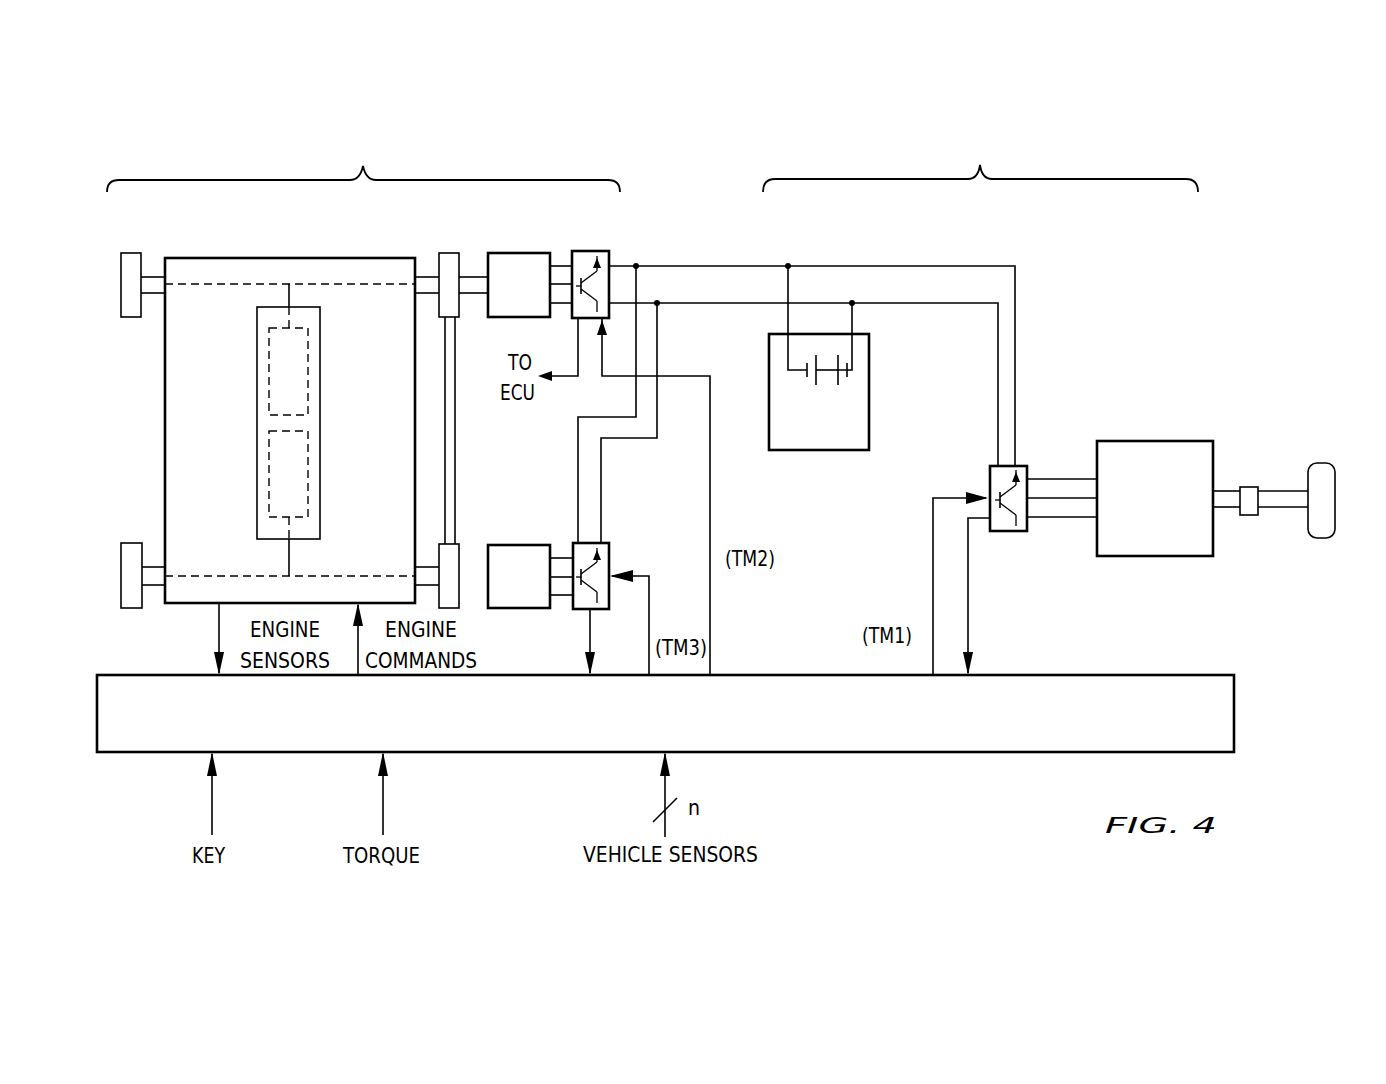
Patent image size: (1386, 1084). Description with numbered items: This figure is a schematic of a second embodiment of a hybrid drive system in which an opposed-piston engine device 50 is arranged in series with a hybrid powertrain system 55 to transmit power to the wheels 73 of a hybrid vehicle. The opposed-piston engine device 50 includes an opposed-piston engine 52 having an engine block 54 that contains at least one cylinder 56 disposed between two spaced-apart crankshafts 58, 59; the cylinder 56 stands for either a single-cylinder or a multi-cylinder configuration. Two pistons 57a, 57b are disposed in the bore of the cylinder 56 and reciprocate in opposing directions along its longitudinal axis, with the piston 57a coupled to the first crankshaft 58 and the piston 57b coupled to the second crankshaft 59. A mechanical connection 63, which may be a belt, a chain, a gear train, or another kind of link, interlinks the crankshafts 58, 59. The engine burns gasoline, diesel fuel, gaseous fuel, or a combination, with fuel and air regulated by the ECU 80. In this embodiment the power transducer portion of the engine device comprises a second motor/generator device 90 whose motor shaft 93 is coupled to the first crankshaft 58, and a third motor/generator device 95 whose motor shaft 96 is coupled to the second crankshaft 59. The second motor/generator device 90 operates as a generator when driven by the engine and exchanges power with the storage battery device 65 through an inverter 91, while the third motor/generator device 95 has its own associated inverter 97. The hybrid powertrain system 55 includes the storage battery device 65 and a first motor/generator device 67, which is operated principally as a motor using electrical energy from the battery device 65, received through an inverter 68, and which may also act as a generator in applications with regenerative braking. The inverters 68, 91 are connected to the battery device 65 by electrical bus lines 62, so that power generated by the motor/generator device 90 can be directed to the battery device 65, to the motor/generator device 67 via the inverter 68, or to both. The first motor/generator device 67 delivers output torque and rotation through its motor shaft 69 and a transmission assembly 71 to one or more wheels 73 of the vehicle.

The opposed-piston engine device 50 is at (363, 162).
The opposed-piston engine 52 is at (266, 236).
The engine block 54 is at (330, 258).
The hybrid powertrain system 55 is at (980, 162).
The cylinder 56 is at (320, 376).
The piston 57a is at (269, 383).
The piston 57b is at (269, 505).
The first crankshaft 58 is at (420, 274).
The second crankshaft 59 is at (420, 565).
The electrical bus lines 62 is at (700, 303).
The mechanical connection 63 is at (458, 470).
The storage battery device 65 is at (869, 405).
The first motor/generator device 67 is at (1125, 441).
The inverter 68 is at (1000, 531).
The motor shaft 69 is at (1230, 490).
The transmission assembly 71 is at (1248, 515).
The wheels 73 is at (1335, 520).
The ECU 80 is at (1234, 712).
The second motor/generator device 90 is at (548, 253).
The inverter 91 is at (590, 251).
The motor shaft 93 is at (468, 278).
The third motor/generator device 95 is at (520, 545).
The motor shaft 96 is at (468, 567).
The inverter 97 is at (576, 612).